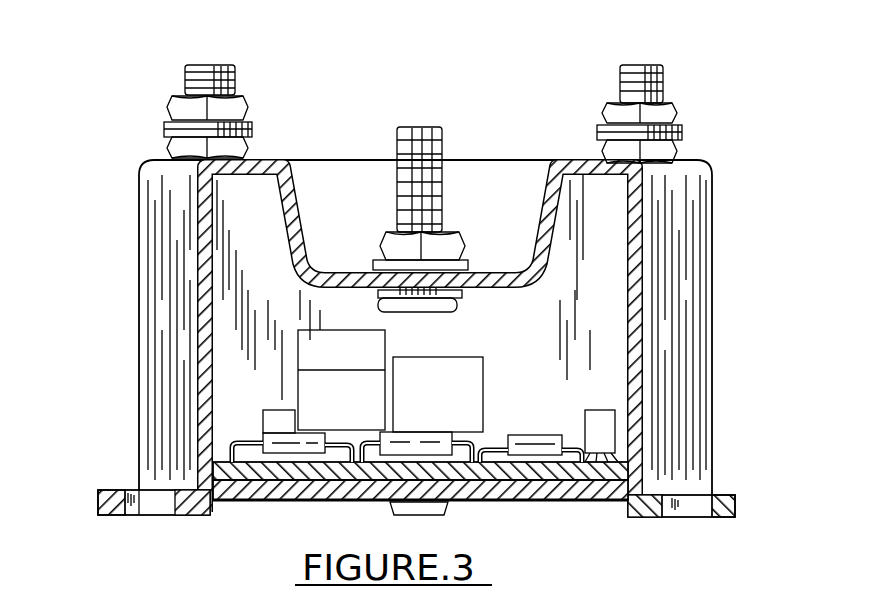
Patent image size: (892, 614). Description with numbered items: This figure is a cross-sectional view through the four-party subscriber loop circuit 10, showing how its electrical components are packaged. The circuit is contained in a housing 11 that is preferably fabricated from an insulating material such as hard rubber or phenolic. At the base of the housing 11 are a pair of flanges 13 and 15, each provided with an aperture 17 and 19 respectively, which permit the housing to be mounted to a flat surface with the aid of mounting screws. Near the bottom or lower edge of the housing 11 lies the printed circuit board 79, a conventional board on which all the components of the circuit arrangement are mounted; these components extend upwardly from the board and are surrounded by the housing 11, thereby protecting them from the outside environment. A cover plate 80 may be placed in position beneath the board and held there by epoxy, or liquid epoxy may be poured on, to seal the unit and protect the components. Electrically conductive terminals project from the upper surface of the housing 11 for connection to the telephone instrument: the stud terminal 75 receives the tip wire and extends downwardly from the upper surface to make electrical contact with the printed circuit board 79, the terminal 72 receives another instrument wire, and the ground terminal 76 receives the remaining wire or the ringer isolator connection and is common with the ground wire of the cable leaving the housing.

The four-party subscriber loop circuit 10 is at (518, 105).
The housing 11 is at (687, 290).
The flange 13 is at (108, 490).
The flange 15 is at (728, 498).
The aperture 17 is at (140, 515).
The aperture 19 is at (713, 502).
The terminal 72 is at (658, 80).
The stud terminal 75 is at (236, 66).
The ground terminal 76 is at (425, 150).
The printed circuit board 79 is at (608, 482).
The cover plate 80 is at (275, 490).